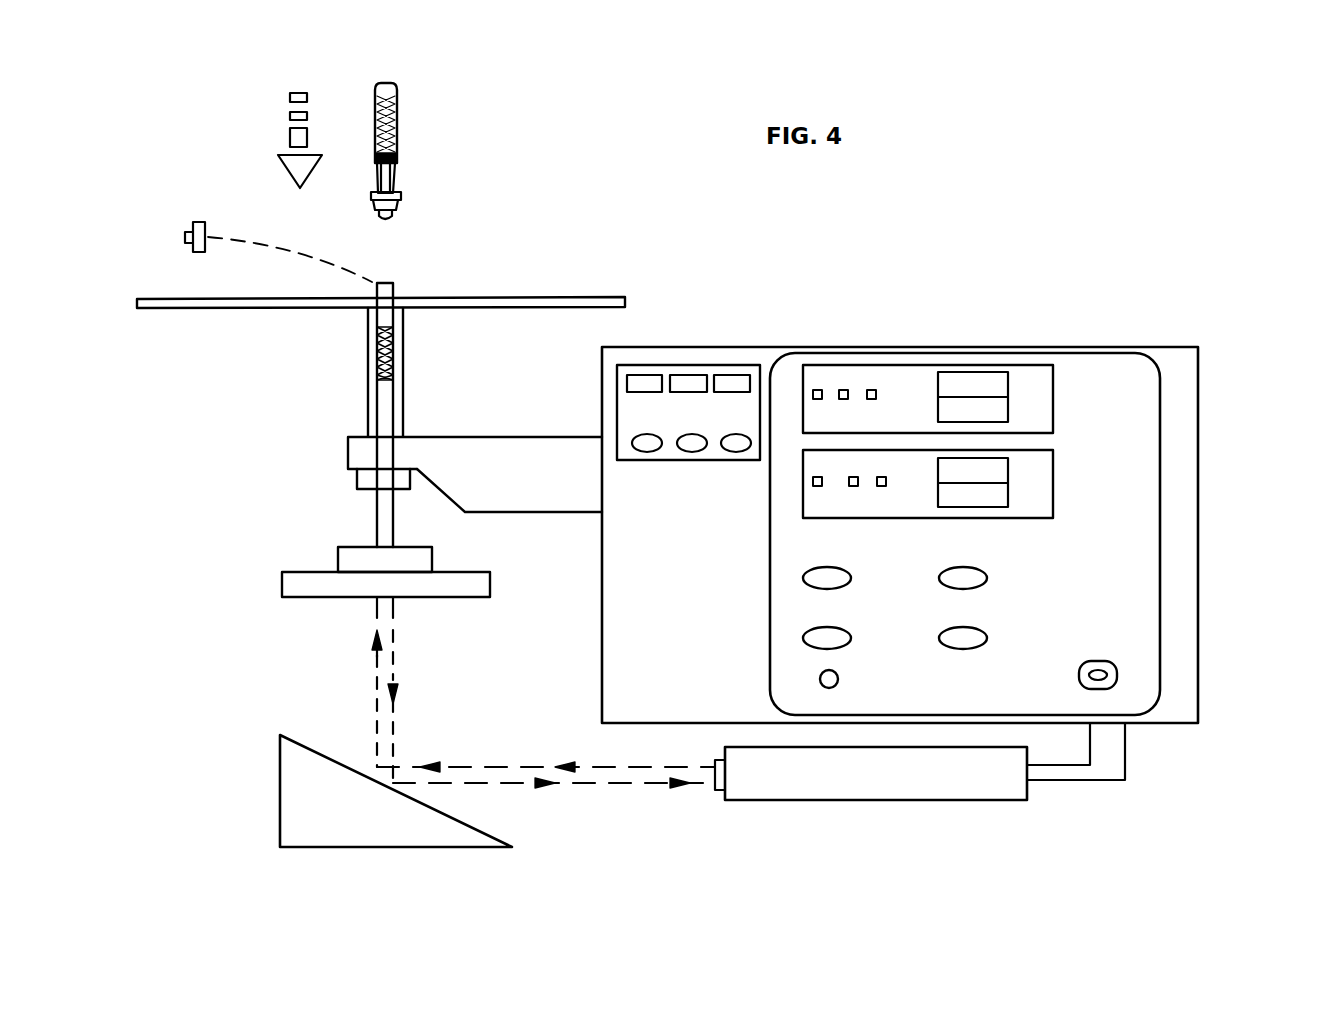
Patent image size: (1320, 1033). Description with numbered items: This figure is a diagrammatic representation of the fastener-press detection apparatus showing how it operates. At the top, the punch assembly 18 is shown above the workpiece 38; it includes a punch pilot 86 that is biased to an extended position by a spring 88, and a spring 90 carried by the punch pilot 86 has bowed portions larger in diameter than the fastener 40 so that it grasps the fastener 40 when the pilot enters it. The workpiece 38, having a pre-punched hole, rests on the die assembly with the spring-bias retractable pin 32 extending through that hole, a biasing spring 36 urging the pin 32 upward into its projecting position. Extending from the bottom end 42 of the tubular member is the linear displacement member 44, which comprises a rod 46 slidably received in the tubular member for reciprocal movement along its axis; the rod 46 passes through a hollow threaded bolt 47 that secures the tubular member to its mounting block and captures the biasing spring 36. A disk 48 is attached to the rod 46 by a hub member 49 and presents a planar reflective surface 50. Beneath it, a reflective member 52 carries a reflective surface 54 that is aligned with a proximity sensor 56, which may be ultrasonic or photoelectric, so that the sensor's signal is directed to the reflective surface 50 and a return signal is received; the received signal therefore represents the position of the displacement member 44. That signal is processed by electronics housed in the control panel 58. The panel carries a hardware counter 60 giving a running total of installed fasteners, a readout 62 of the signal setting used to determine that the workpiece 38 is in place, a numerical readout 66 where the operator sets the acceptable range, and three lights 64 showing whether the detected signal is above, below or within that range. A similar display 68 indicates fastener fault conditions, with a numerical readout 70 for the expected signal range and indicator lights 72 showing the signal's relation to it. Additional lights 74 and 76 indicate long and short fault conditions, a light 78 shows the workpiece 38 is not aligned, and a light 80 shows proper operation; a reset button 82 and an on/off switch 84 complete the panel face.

The punch assembly 18 is at (397, 108).
The spring 88 is at (378, 94).
The punch pilot 86 is at (378, 178).
The spring 90 is at (377, 186).
The fastener 40 is at (401, 196).
The spring-bias retractable pin 32 is at (395, 290).
The biasing spring 36 is at (376, 340).
The workpiece 38 is at (522, 297).
The bottom end 42 is at (368, 437).
The linear displacement member 44 is at (282, 549).
The rod 46 is at (377, 508).
The hollow threaded bolt 47 is at (357, 479).
The disk 48 is at (270, 588).
The hub member 49 is at (422, 556).
The planar reflective surface 50 is at (302, 600).
The reflective member 52 is at (292, 792).
The reflective surface 54 is at (333, 758).
The proximity sensor 56 is at (845, 800).
The control panel 58 is at (1198, 425).
The hardware counter 60 is at (692, 365).
The readout 62 is at (1053, 380).
The lights 64 is at (818, 390).
The numerical readout 66 is at (968, 372).
The display 68 is at (1053, 495).
The numerical readout 70 is at (1008, 468).
The indicator lights 72 is at (818, 477).
The light 74 is at (830, 568).
The light 76 is at (970, 568).
The light 78 is at (830, 628).
The light 80 is at (970, 628).
The reset button 82 is at (838, 677).
The on/off switch 84 is at (1100, 660).